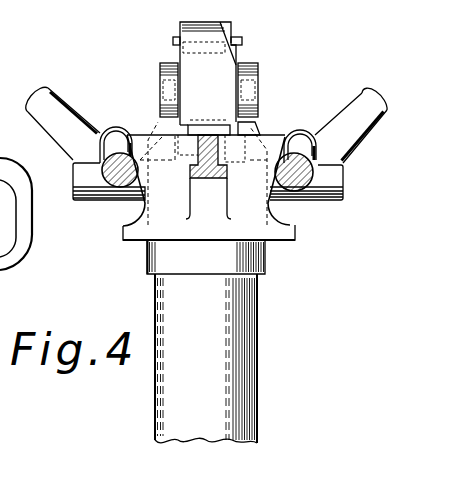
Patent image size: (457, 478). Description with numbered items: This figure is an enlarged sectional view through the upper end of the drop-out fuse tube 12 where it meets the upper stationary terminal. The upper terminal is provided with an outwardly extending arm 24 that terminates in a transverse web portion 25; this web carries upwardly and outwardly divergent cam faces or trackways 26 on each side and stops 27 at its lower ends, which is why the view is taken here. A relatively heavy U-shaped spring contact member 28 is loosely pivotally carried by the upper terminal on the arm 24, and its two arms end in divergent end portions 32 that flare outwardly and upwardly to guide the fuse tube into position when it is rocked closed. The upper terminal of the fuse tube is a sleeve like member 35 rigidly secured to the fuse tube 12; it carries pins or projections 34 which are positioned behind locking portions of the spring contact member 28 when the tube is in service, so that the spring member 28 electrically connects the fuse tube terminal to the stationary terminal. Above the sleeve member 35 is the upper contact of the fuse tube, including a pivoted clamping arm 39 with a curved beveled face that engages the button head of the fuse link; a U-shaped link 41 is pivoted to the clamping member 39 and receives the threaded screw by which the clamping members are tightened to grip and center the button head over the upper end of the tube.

The drop-out fuse tube 12 is at (257, 393).
The outwardly extending arm 24 is at (196, 150).
The transverse web portion 25 is at (272, 137).
The cam faces or trackways 26 is at (127, 195).
The stops 27 is at (122, 233).
The spring contact member 28 is at (112, 126).
The divergent end portions 32 is at (68, 92).
The pins or projections 34 is at (74, 198).
The sleeve like member 35 is at (266, 270).
The clamping arm 39 is at (196, 66).
The U-shaped link 41 is at (251, 64).